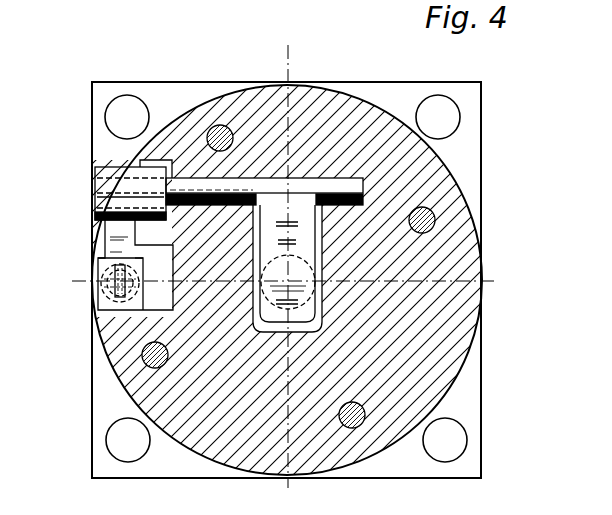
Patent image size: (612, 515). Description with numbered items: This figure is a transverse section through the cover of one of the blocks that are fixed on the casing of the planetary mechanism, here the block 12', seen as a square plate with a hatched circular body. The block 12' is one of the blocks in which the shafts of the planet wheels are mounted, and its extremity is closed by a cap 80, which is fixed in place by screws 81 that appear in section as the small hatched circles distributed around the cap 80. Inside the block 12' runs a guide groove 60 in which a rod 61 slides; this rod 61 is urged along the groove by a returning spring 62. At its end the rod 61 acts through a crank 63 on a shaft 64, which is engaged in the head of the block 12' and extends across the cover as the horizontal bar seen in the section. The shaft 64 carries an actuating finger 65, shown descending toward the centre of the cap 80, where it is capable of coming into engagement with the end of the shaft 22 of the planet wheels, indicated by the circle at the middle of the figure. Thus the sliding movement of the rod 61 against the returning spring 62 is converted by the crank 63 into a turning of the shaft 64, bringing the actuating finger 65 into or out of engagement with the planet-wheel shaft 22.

The block 12' is at (311, 280).
The cap 80 is at (460, 254).
The screws 81 is at (221, 126).
The shaft 64 is at (244, 189).
The actuating finger 65 is at (300, 245).
The shaft of the planet wheels 22 is at (302, 305).
The guide groove 60 is at (128, 316).
The returning spring 62 is at (98, 312).
The rod 61 is at (100, 290).
The crank 63 is at (110, 236).